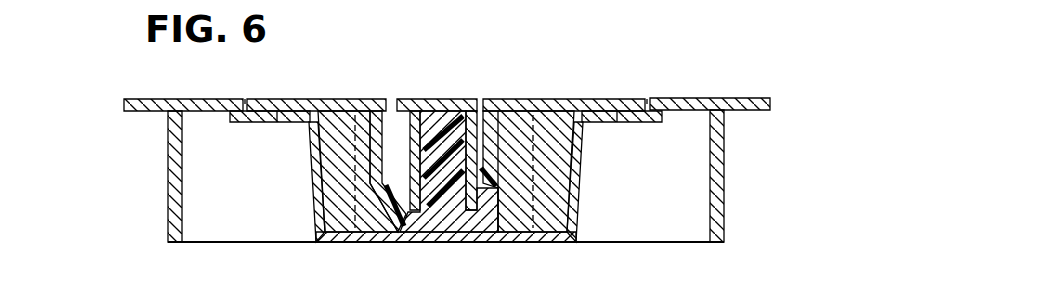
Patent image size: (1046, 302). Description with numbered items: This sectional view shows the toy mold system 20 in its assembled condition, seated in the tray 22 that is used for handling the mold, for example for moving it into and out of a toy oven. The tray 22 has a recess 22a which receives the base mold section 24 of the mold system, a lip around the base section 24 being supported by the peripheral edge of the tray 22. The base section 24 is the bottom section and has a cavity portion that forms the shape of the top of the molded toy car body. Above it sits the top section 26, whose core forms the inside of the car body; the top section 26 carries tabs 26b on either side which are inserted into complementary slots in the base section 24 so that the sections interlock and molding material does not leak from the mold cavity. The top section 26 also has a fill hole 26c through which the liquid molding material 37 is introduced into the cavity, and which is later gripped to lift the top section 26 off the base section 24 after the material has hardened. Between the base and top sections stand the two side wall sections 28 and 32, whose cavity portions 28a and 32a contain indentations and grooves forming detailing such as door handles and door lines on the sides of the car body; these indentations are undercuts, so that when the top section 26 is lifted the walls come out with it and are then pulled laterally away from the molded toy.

The toy mold system 20 is at (803, 138).
The tray 22 is at (722, 190).
The recess 22a is at (124, 105).
The base mold section 24 is at (566, 236).
The top mold section 26 is at (333, 99).
The tabs 26b is at (253, 103).
The fill hole 26c is at (418, 120).
The side wall section 28 is at (558, 190).
The cavity portion 28a is at (530, 185).
The side wall section 32 is at (335, 172).
The cavity portion 32a is at (384, 182).
The molding material 37 is at (460, 122).